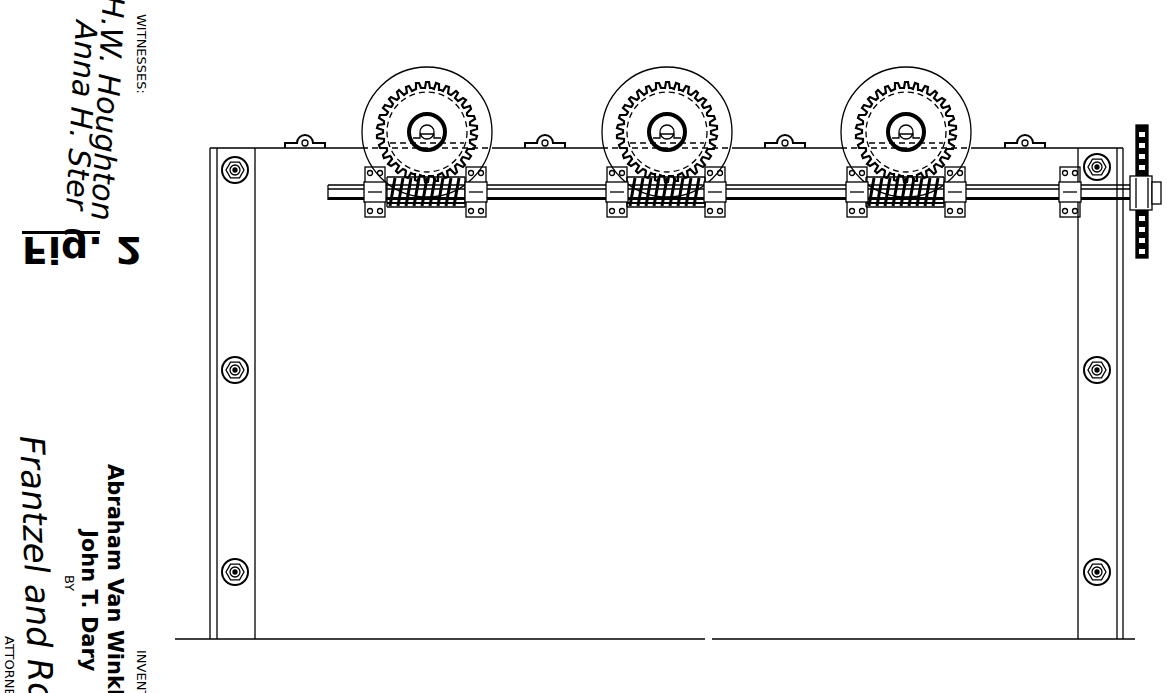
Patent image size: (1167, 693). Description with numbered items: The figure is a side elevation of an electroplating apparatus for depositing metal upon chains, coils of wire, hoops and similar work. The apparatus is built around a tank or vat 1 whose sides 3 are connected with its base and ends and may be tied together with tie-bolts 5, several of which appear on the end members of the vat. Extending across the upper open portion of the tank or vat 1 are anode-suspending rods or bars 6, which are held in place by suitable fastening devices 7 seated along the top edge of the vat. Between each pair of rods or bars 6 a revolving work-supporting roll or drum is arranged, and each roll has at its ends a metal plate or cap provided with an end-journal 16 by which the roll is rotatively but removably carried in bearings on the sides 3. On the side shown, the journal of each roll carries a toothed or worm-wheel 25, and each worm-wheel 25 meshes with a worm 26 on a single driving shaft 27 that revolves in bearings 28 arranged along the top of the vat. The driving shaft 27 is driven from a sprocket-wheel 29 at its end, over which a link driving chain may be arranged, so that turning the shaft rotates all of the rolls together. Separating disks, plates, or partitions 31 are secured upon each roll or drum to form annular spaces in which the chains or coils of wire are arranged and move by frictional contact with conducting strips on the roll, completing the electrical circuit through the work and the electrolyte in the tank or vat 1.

The tank or vat 1 is at (642, 391).
The sides 3 is at (520, 622).
The tie-bolts 5 is at (222, 170).
The rods or bars 6 is at (300, 141).
The fastening devices 7 is at (309, 141).
The end-journal 16 is at (428, 131).
The toothed or worm-wheel 25 is at (418, 97).
The worm 26 is at (427, 207).
The driving shaft 27 is at (538, 188).
The bearings 28 is at (374, 192).
The sprocket-wheel 29 is at (1138, 128).
The separating disks, plates, or partitions 31 is at (437, 76).